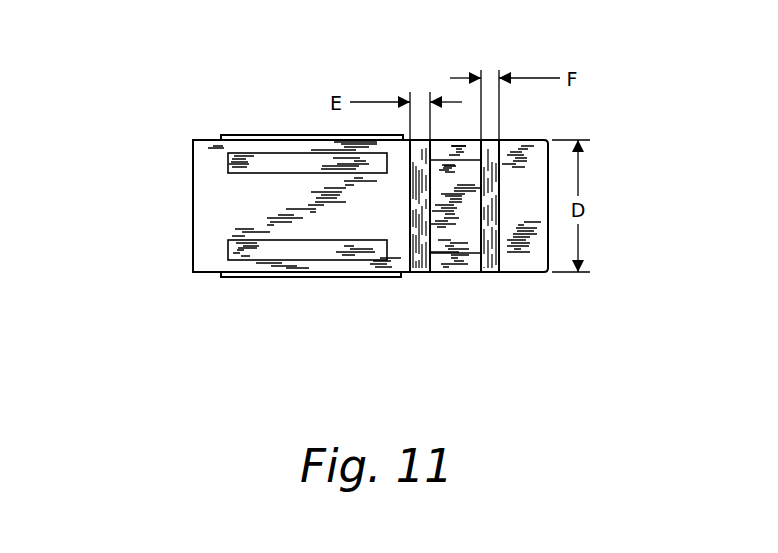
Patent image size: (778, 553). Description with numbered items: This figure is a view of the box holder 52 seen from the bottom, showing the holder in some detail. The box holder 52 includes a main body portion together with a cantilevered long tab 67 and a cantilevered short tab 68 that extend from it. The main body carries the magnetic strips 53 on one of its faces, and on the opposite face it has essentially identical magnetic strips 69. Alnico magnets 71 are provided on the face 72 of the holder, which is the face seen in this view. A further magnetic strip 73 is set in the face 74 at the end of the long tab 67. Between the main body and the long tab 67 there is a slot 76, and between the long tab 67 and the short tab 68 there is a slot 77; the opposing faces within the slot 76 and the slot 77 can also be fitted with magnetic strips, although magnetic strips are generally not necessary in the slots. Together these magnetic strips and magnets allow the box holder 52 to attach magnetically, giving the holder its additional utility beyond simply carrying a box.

The box holder 52 is at (160, 263).
The magnetic strips 53 is at (240, 278).
The cantilevered long tab 67 is at (447, 273).
The cantilevered short tab 68 is at (538, 273).
The magnetic strips 69 is at (269, 135).
The Alnico magnets 71 is at (228, 250).
The face 72 is at (200, 160).
The magnetic strip 73 is at (455, 175).
The face 74 is at (465, 148).
The slot 76 is at (414, 273).
The slot 77 is at (490, 273).